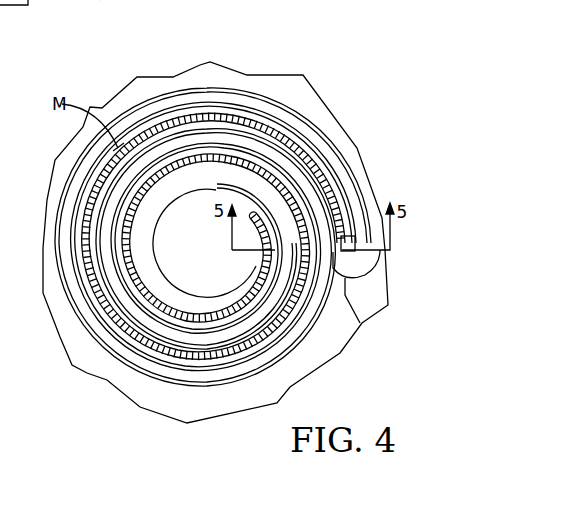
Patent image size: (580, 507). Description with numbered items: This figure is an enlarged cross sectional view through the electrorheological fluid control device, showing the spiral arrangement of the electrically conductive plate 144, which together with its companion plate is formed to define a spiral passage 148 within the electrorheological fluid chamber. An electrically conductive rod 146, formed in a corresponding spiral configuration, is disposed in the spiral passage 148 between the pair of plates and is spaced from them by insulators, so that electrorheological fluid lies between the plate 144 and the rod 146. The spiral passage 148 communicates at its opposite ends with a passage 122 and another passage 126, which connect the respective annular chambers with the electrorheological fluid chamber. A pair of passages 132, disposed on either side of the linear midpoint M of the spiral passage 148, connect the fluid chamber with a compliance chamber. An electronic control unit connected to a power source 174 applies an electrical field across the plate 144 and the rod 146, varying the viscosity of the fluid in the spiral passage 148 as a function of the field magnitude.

The passage 122 is at (363, 326).
The passage 126 is at (262, 256).
The passages 132 is at (180, 124).
The electrically conductive plate 144 is at (318, 138).
The electrically conductive rod 146 is at (145, 347).
The spiral passage 148 is at (340, 190).
The power source 174 is at (100, 0).